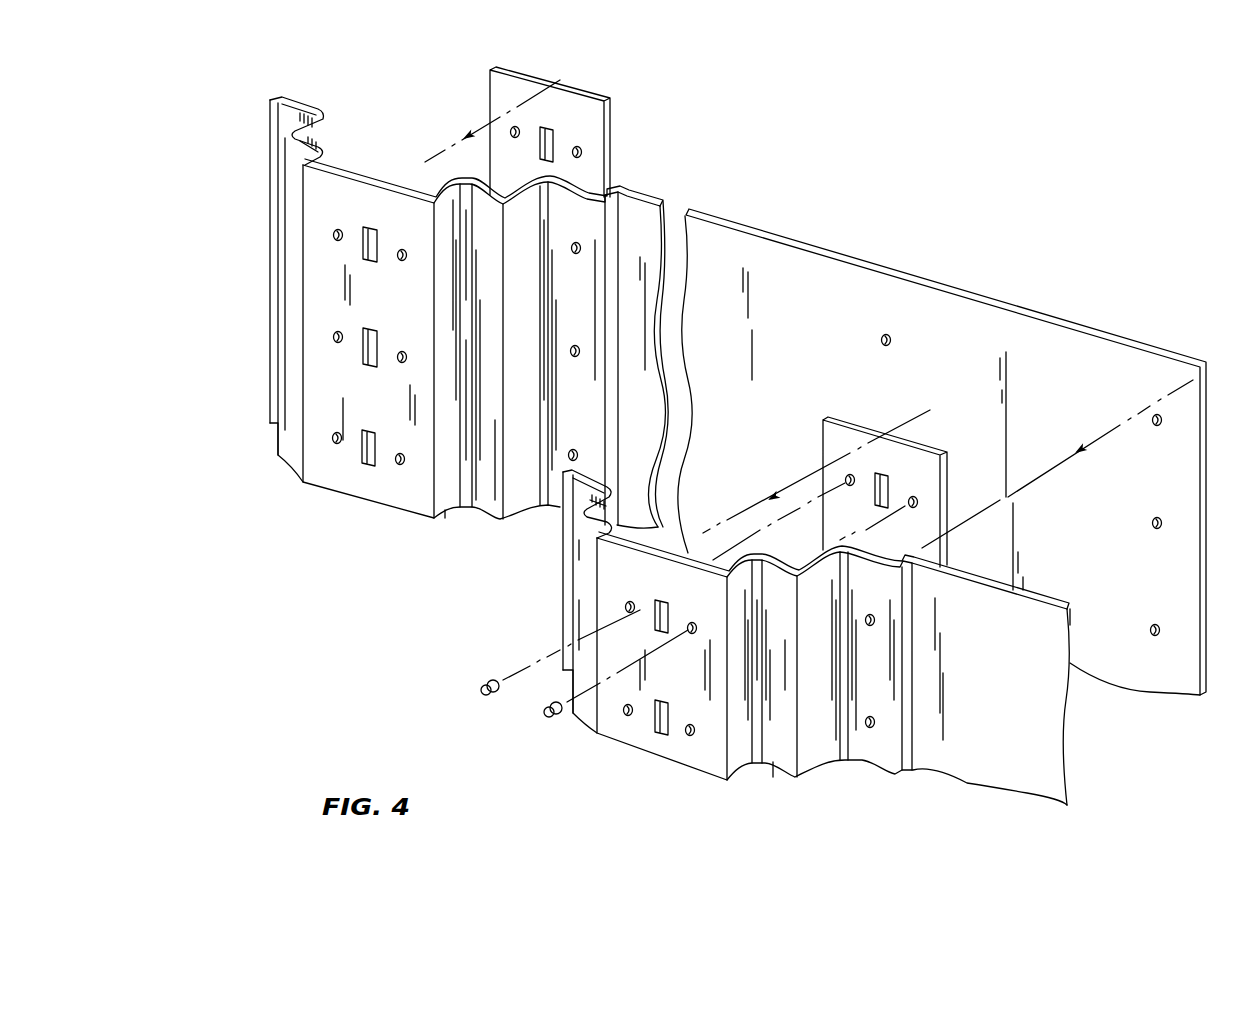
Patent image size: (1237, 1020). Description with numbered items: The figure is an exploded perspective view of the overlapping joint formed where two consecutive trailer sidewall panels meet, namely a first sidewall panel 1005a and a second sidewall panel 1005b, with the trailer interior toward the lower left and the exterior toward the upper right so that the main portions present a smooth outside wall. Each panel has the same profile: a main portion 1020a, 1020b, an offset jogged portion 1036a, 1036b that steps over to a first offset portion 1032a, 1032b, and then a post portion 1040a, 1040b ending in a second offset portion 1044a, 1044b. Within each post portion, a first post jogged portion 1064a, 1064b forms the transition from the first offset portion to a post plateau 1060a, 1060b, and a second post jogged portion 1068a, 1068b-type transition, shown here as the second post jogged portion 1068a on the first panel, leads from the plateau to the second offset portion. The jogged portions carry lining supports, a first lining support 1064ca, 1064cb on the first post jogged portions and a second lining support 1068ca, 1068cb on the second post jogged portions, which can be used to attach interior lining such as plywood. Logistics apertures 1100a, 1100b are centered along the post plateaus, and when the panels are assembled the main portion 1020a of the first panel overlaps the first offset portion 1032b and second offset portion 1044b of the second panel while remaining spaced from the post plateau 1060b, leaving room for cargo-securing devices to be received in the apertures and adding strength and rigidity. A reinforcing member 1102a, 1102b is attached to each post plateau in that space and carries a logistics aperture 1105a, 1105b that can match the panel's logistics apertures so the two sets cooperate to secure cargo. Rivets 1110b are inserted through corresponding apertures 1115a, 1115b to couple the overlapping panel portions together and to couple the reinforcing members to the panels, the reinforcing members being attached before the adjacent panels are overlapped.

The first sidewall panel 1005a is at (992, 180).
The second sidewall panel 1005b is at (548, 736).
The main portion 1020a is at (935, 300).
The main portion 1020b is at (1067, 750).
The post portion 1040a is at (322, 563).
The post portion 1040b is at (620, 771).
The second offset portion 1044a is at (285, 100).
The second offset portion 1044b is at (575, 502).
The second post jogged portion 1068a is at (282, 134).
The second lining support 1068ca is at (293, 223).
The second lining support 1068cb is at (572, 494).
The post plateau 1060a is at (400, 502).
The post plateau 1060b is at (693, 753).
The first post jogged portion 1064a is at (503, 203).
The first post jogged portion 1064b is at (797, 577).
The first lining support 1064ca is at (478, 522).
The first lining support 1064cb is at (773, 762).
The first offset portion 1032a is at (583, 207).
The first offset portion 1032b is at (880, 753).
The offset jogged portion 1036a is at (610, 237).
The offset jogged portion 1036b is at (907, 727).
The reinforcing member 1102a is at (577, 104).
The reinforcing member 1102b is at (918, 470).
The logistics aperture 1105a is at (546, 125).
The logistics aperture 1105b is at (888, 487).
The logistics apertures 1100a is at (365, 227).
The logistics apertures 1100b is at (668, 610).
The apertures 1115a is at (582, 157).
The apertures 1115b is at (852, 474).
The rivets 1110b is at (543, 712).